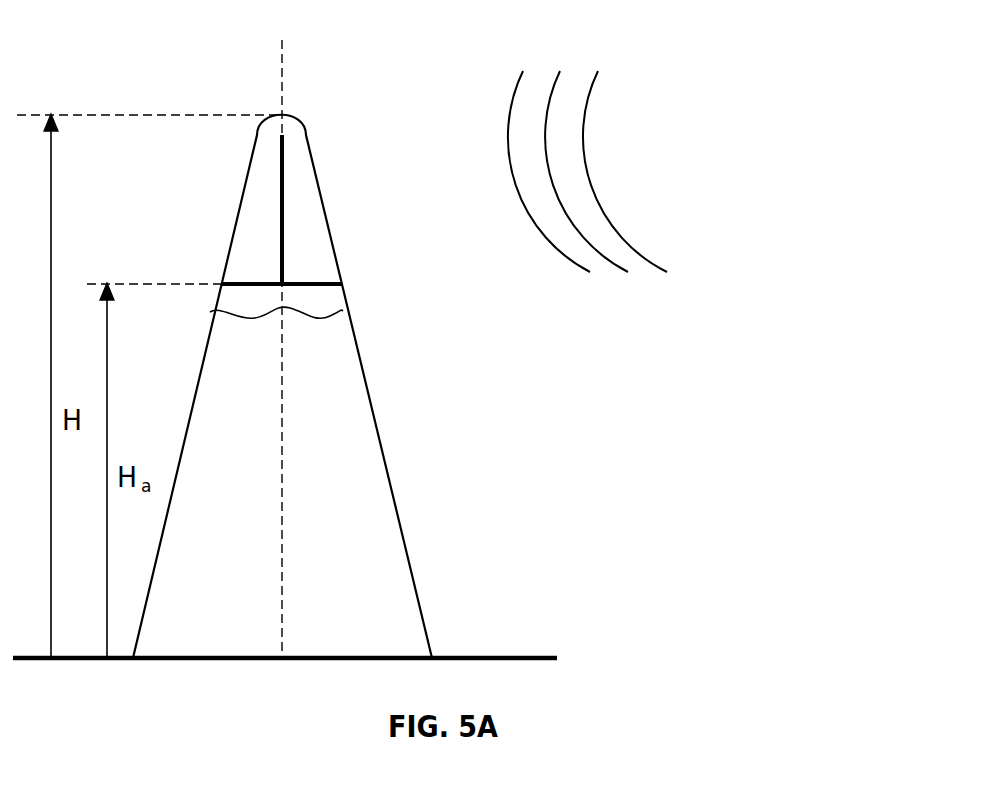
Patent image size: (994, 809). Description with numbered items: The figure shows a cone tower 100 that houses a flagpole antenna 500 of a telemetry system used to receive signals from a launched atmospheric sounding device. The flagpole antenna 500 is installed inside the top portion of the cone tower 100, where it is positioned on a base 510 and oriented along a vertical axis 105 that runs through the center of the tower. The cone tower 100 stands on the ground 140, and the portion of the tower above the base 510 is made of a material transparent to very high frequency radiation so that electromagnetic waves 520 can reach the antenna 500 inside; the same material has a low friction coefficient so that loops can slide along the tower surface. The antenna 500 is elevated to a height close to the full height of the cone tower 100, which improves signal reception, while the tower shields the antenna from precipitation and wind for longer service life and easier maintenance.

The cone tower 100 is at (388, 572).
The vertical axis 105 is at (282, 627).
The ground 140 is at (482, 647).
The flagpole antenna 500 is at (273, 222).
The base 510 is at (318, 277).
The electromagnetic waves 520 is at (572, 193).